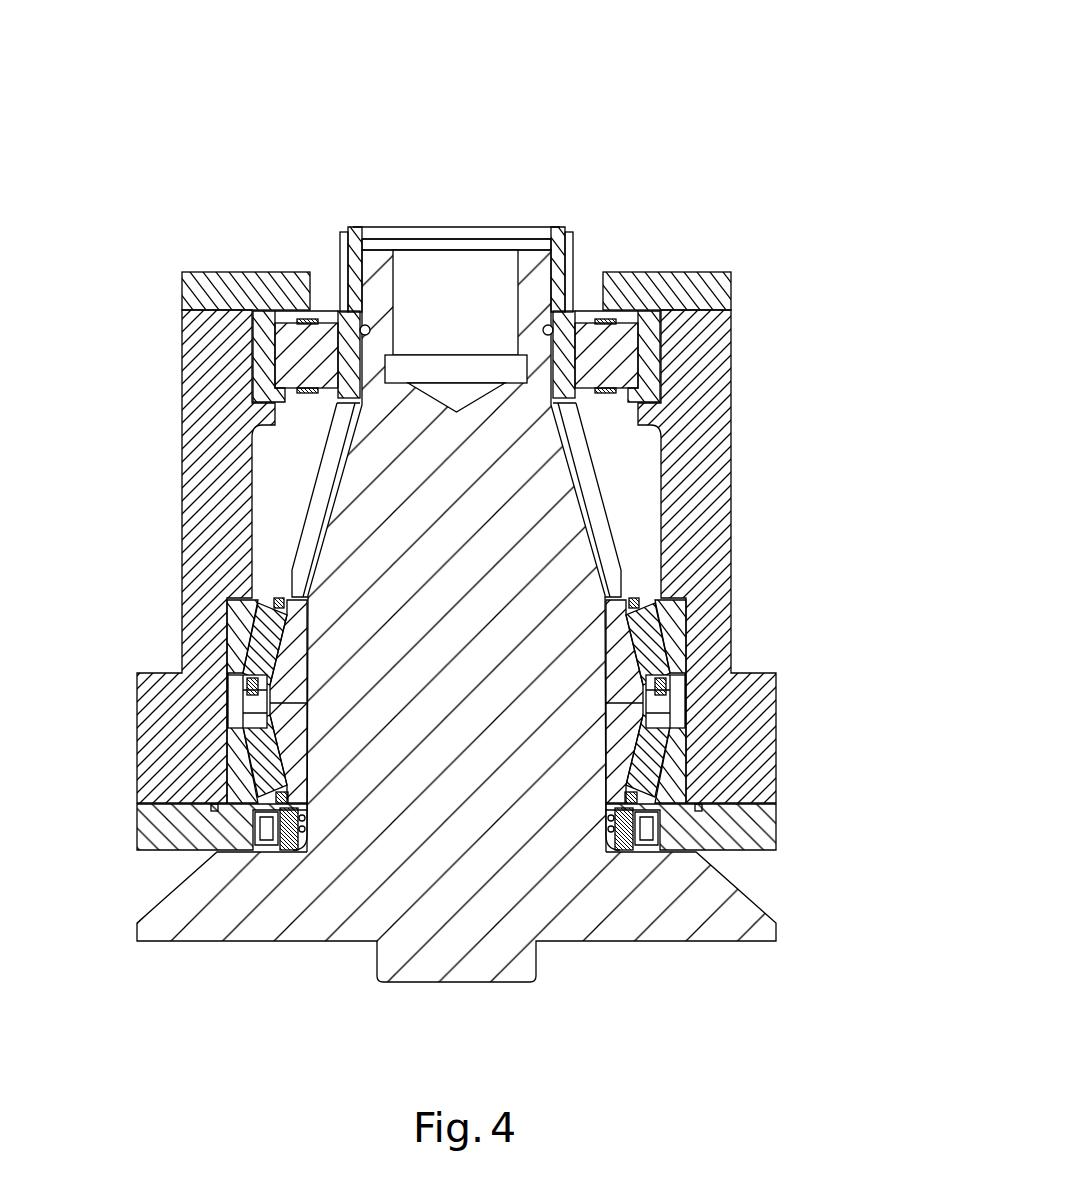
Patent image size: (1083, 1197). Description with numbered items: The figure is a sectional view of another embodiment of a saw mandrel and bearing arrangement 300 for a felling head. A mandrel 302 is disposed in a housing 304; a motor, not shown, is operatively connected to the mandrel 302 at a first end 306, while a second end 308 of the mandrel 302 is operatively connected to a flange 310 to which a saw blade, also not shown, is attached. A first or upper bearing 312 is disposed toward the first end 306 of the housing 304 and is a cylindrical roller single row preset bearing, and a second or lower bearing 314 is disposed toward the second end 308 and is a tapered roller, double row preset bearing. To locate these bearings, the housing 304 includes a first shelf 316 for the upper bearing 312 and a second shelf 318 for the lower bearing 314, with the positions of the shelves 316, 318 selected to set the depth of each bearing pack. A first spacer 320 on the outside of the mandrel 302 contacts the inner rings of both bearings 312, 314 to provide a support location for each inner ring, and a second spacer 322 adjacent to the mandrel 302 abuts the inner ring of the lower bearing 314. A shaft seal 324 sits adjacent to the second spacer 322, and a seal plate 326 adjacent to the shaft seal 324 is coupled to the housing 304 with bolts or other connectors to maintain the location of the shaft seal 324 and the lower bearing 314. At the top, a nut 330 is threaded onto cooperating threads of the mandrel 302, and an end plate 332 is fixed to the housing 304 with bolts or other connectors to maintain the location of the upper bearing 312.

The saw mandrel and bearing arrangement 300 is at (674, 140).
The mandrel 302 is at (570, 560).
The housing 304 is at (727, 473).
The first end 306 is at (530, 258).
The second end 308 is at (300, 745).
The flange 310 is at (173, 910).
The upper bearing 312 is at (262, 357).
The lower bearing 314 is at (677, 770).
The first shelf 316 is at (647, 407).
The second shelf 318 is at (245, 580).
The first spacer 320 is at (322, 487).
The second spacer 322 is at (287, 852).
The shaft seal 324 is at (635, 852).
The seal plate 326 is at (760, 825).
The nut 330 is at (372, 232).
The end plate 332 is at (190, 292).